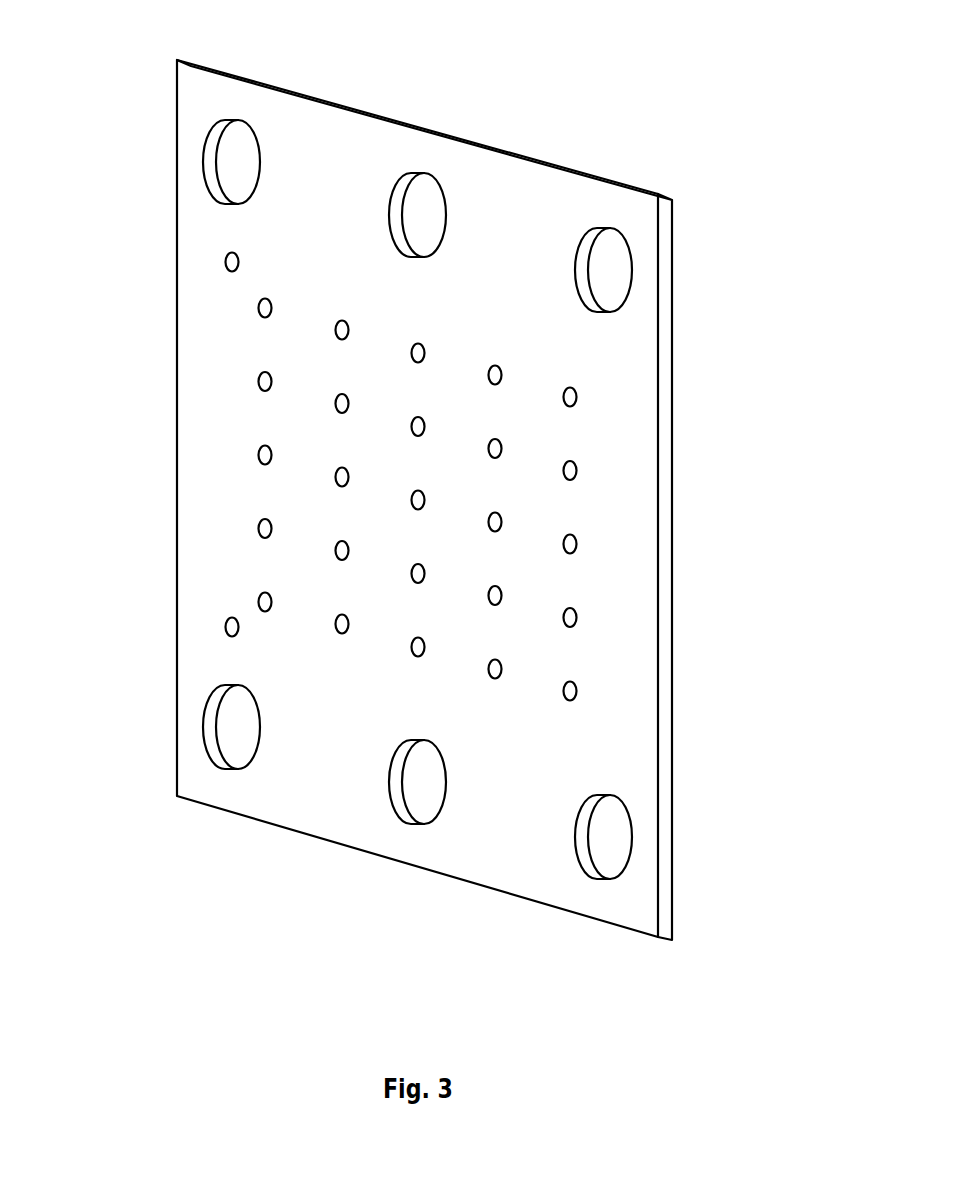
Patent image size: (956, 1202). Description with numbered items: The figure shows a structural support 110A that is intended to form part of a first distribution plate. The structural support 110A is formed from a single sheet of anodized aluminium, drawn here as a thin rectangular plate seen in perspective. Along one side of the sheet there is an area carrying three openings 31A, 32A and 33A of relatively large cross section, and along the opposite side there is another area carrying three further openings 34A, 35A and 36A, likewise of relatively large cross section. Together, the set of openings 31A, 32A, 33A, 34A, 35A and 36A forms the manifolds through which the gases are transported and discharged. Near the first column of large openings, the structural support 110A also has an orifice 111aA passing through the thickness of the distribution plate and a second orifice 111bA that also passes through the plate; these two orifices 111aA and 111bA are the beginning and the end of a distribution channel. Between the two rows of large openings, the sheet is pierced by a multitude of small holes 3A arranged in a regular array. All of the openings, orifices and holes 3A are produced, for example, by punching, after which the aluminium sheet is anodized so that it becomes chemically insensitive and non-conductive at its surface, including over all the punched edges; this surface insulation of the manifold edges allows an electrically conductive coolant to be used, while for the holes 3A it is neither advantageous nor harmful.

The structural support 110A is at (623, 702).
The opening 31A is at (233, 142).
The opening 32A is at (420, 193).
The opening 33A is at (607, 248).
The opening 34A is at (232, 732).
The opening 35A is at (423, 788).
The opening 36A is at (612, 840).
The orifice 111aA is at (227, 263).
The orifice 111bA is at (227, 628).
The holes 3A is at (574, 391).